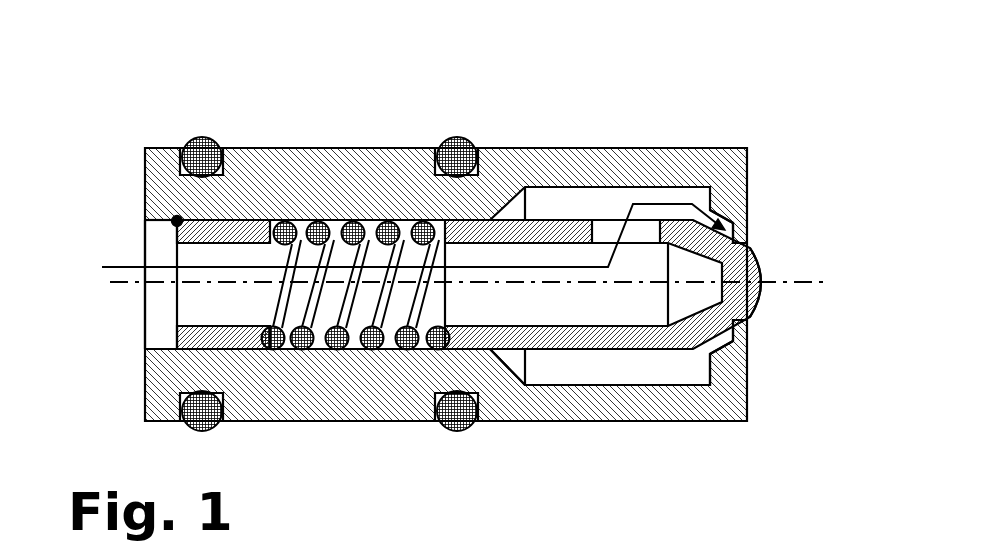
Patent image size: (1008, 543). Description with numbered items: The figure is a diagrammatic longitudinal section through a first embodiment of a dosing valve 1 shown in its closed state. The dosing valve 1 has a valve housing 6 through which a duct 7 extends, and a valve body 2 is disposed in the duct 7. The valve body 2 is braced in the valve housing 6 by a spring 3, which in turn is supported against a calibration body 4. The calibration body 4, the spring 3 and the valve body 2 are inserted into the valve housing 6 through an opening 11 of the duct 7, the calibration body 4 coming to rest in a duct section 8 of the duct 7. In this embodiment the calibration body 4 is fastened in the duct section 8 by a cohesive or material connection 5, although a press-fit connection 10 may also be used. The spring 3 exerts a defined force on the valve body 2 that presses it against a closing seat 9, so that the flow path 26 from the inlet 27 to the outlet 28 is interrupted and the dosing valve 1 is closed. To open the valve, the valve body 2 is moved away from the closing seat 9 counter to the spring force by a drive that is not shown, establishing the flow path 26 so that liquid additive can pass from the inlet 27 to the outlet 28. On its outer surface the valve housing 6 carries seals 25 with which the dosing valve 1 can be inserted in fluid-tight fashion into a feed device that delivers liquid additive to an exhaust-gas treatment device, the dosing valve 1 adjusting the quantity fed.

The dosing valve 1 is at (752, 102).
The valve body 2 is at (602, 350).
The spring 3 is at (370, 222).
The calibration body 4 is at (247, 228).
The cohesive or material connection 5 is at (172, 225).
The valve housing 6 is at (565, 150).
The duct 7 is at (660, 368).
The duct section 8 is at (160, 332).
The closing seat 9 is at (747, 237).
The press-fit connection 10 is at (252, 353).
The opening 11 is at (143, 247).
The seals 25 is at (197, 135).
The flow path 26 is at (668, 204).
The inlet 27 is at (143, 287).
The outlet 28 is at (762, 290).